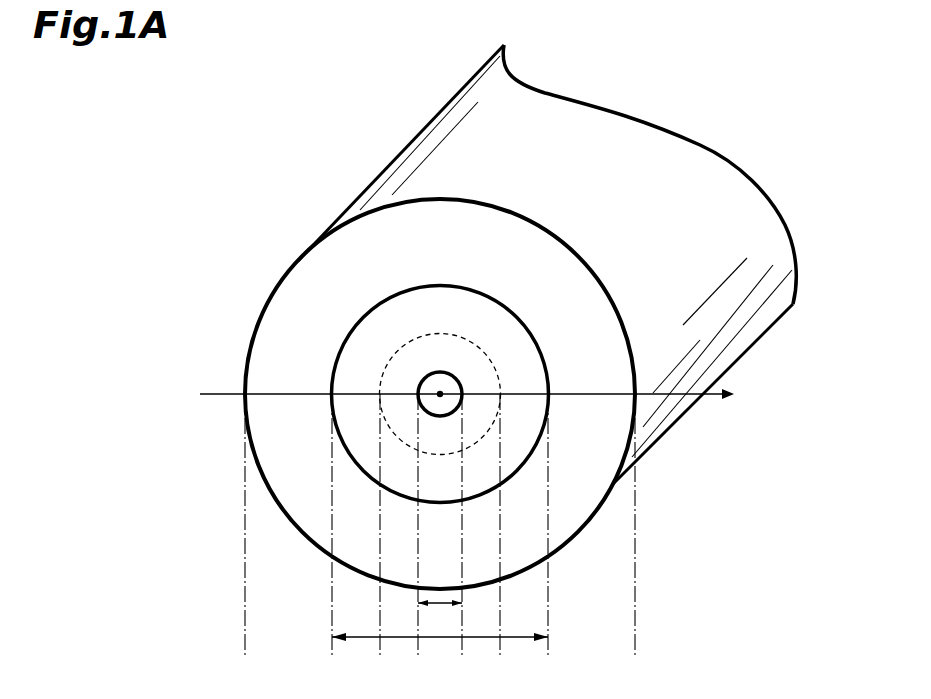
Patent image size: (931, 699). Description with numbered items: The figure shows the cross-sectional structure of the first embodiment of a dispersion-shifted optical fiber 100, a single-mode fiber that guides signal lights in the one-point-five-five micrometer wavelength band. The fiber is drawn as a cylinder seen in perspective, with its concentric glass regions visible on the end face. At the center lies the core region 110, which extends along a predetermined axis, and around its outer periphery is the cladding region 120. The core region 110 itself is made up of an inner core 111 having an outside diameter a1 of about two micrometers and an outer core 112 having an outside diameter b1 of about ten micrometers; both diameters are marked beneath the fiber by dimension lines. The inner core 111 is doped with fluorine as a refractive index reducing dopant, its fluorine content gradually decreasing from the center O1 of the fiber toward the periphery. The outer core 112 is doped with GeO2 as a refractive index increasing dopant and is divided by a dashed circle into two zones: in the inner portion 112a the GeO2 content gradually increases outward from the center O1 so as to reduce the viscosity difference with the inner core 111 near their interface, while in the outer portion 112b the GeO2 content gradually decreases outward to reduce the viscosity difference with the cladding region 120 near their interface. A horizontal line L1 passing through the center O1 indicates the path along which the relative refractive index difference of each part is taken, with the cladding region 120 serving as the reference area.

The dispersion-shifted optical fiber 100 is at (688, 182).
The core region 110 is at (133, 222).
The inner core 111 is at (435, 383).
The outer core 112 is at (203, 258).
The inner portion of the outer core 112a is at (410, 352).
The outer portion of the outer core 112b is at (352, 375).
The cladding region 120 is at (558, 520).
The center of the dispersion-shifted optical fiber O1 is at (441, 393).
The line passing through the center L1 is at (481, 397).
The outside diameter of the inner core a1 is at (440, 616).
The outside diameter of the outer core b1 is at (440, 648).